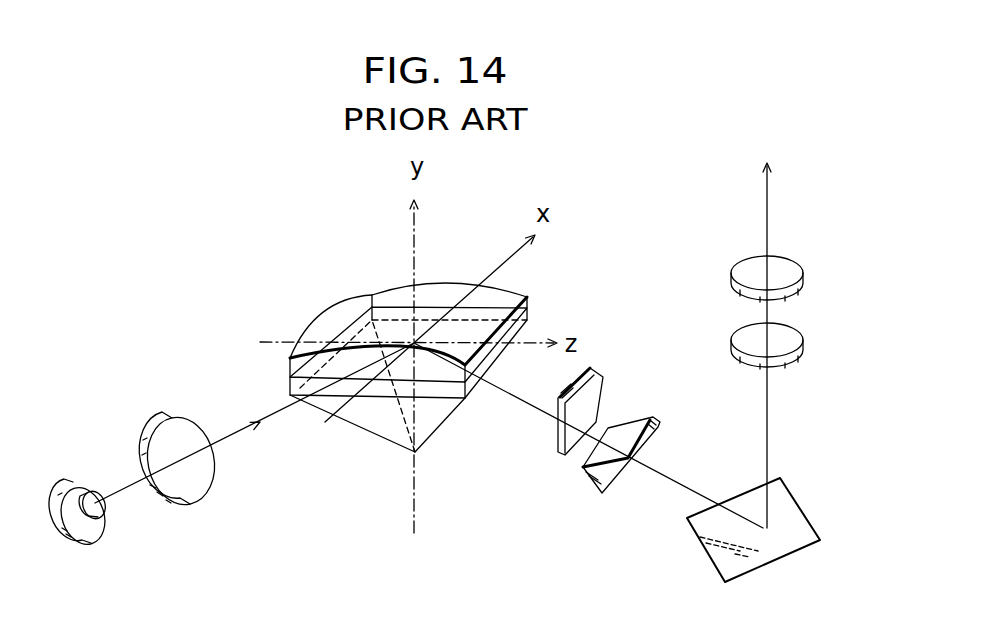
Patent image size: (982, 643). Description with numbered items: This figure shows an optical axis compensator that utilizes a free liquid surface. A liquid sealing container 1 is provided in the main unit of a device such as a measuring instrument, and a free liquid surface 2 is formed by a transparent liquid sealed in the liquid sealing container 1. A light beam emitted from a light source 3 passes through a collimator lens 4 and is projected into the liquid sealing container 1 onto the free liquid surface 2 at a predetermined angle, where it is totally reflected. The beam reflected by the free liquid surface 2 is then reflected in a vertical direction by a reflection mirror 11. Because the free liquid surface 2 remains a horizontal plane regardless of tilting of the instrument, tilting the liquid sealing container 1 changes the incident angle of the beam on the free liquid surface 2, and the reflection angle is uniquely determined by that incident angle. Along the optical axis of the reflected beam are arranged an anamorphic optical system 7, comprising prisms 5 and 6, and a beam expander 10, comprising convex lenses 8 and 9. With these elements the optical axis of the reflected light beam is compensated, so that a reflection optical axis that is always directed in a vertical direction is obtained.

The liquid sealing container 1 is at (380, 440).
The free liquid surface 2 is at (478, 320).
The light source 3 is at (102, 538).
The collimator lens 4 is at (195, 505).
The prism 5 is at (592, 375).
The prism 6 is at (642, 415).
The anamorphic optical system 7 is at (546, 498).
The convex lens 8 is at (780, 345).
The convex lens 9 is at (785, 275).
The beam expander 10 is at (813, 292).
The reflection mirror 11 is at (802, 507).